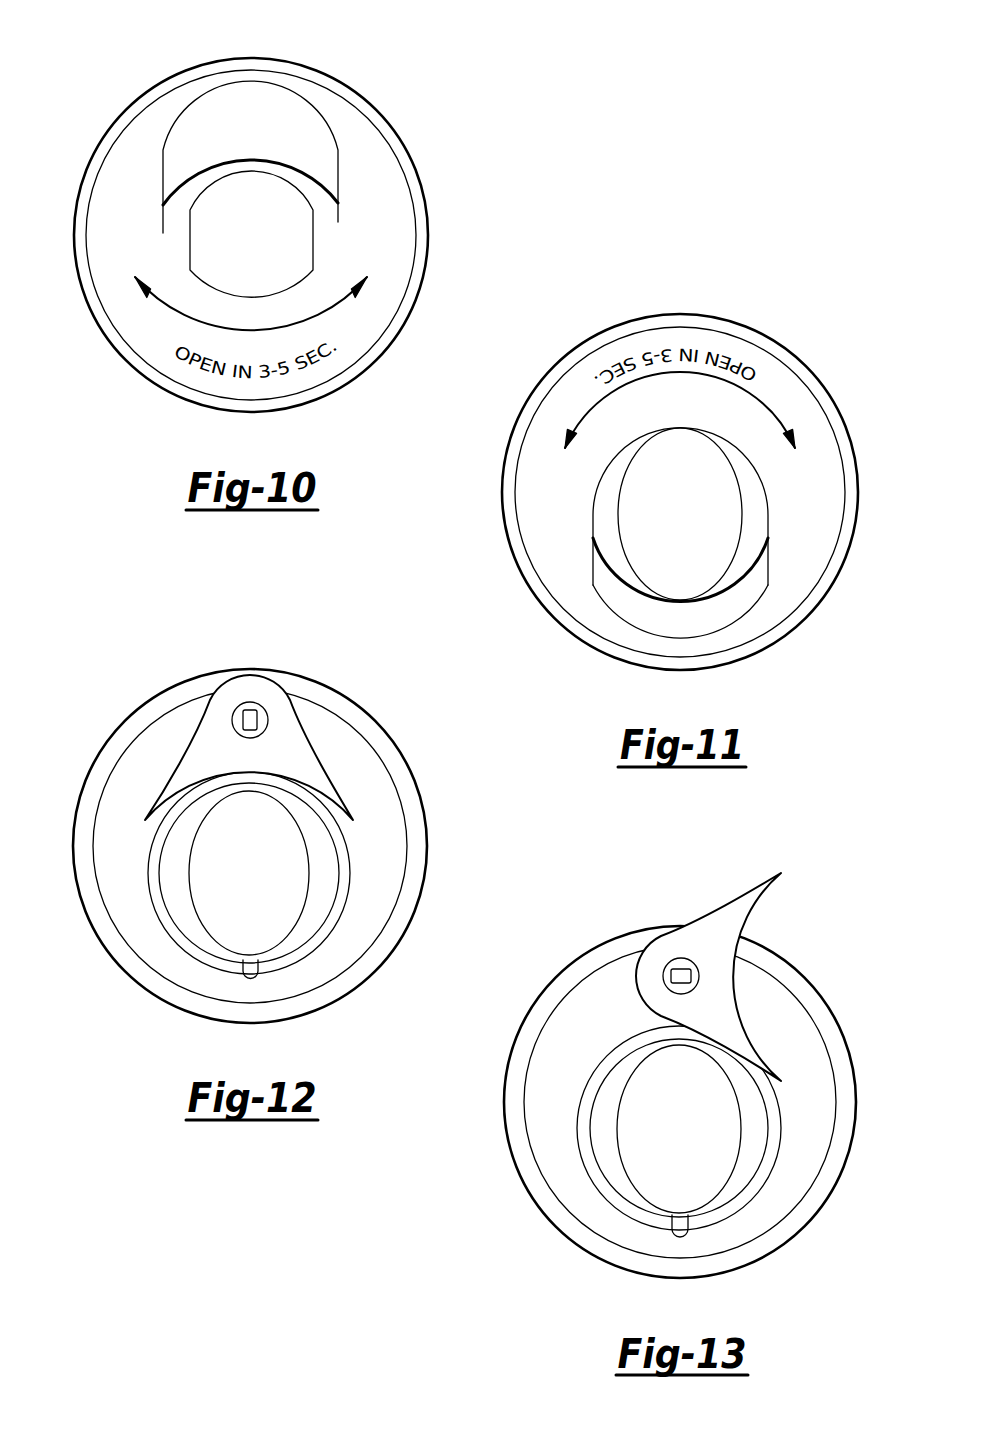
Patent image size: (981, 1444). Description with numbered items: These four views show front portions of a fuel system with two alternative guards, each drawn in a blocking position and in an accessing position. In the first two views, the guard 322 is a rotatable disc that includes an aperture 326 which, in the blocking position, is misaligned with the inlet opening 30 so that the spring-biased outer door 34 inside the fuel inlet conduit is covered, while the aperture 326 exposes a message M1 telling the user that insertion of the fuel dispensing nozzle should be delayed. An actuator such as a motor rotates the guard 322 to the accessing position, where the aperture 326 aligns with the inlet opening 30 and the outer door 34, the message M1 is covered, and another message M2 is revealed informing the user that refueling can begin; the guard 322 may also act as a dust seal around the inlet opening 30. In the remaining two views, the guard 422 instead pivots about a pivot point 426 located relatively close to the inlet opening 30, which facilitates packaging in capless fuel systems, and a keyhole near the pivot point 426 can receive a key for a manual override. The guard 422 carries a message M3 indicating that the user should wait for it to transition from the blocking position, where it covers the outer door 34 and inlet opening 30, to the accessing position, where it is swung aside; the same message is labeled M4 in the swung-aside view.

In FIG. 10, the guard 322 is at (363, 142).
In FIG. 11, the guard 322 is at (792, 400).
In FIG. 10, the aperture 326 is at (338, 250).
In FIG. 11, the aperture 326 is at (767, 503).
In FIG. 10, the outer door 34 is at (215, 235).
In FIG. 11, the outer door 34 is at (648, 515).
In FIG. 12, the outer door 34 is at (213, 893).
In FIG. 13, the outer door 34 is at (657, 1152).
In FIG. 10, the message M1 is at (238, 105).
In FIG. 11, the message M2 is at (690, 641).
In FIG. 12, the guard 422 is at (313, 763).
In FIG. 13, the guard 422 is at (723, 911).
In FIG. 12, the pivot point 426 is at (252, 702).
In FIG. 12, the inlet opening 30 is at (303, 958).
In FIG. 13, the inlet opening 30 is at (736, 1215).
In FIG. 12, the message M3 is at (335, 816).
In FIG. 13, the please wait message M4 is at (783, 1046).